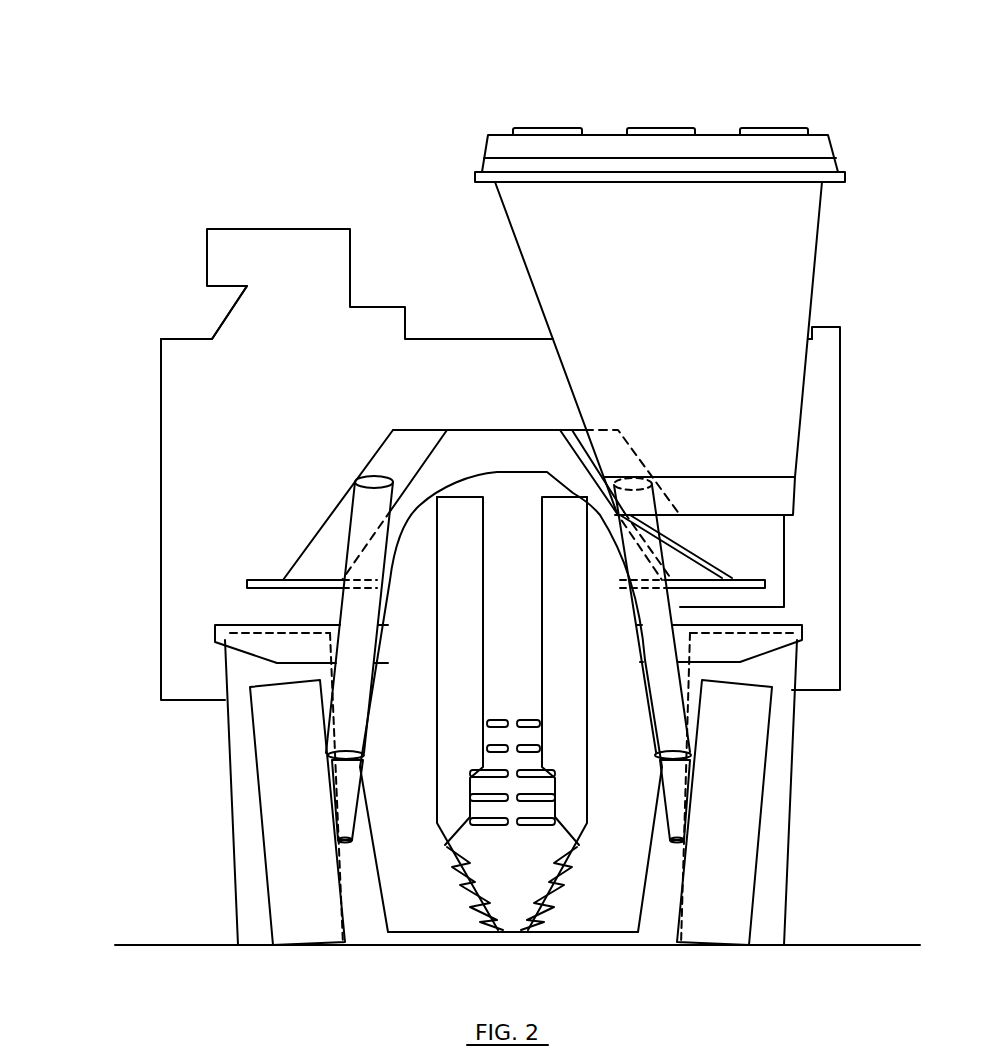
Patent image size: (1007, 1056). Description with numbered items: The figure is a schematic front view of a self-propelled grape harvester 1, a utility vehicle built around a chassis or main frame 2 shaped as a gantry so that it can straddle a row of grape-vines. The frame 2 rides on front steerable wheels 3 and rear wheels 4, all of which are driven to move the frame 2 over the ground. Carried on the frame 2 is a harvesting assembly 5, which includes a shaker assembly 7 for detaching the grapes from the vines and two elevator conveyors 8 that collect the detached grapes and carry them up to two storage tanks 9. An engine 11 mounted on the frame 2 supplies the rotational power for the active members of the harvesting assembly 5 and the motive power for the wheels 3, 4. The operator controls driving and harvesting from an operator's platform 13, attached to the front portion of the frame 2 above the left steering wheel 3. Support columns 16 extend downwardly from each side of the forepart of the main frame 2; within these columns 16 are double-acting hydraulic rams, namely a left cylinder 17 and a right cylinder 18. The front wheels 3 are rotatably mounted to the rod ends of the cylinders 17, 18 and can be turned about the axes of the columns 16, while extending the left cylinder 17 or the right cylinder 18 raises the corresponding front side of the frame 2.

The grape harvester 1 is at (432, 83).
The main frame 2 is at (512, 470).
The front steerable wheels 3 is at (287, 823).
The rear wheels 4 is at (252, 892).
The harvesting assembly 5 is at (464, 305).
The shaker assembly 7 is at (513, 842).
The elevator conveyors 8 is at (528, 930).
The storage tanks 9 is at (182, 339).
The engine 11 is at (133, 423).
The operator's platform 13 is at (822, 515).
The support columns 16 is at (350, 712).
The left hydraulic cylinder 17 is at (657, 676).
The right hydraulic cylinder 18 is at (377, 655).